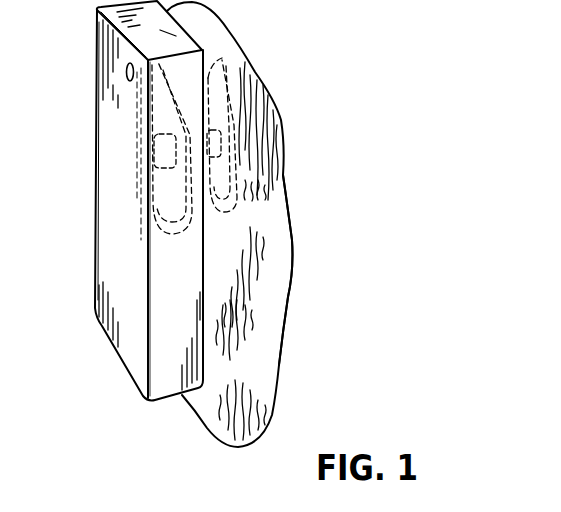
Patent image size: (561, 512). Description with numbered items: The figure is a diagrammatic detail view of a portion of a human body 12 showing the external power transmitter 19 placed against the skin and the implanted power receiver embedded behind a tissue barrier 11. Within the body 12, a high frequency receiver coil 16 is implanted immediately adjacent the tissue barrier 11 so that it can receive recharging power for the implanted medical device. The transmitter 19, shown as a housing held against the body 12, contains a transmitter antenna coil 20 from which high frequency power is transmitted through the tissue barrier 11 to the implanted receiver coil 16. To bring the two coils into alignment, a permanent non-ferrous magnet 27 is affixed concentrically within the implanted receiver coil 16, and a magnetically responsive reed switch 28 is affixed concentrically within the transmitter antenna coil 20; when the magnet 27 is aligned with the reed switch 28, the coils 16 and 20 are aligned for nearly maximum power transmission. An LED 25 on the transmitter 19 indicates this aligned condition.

The tissue barrier 11 is at (270, 336).
The body 12 is at (287, 297).
The high frequency receiver coil 16 is at (243, 43).
The transmitter 19 is at (138, 354).
The transmitter antenna coil 20 is at (148, 232).
The LED 25 is at (127, 79).
The permanent non-ferrous magnet 27 is at (222, 147).
The magnetically responsive reed switch 28 is at (154, 176).